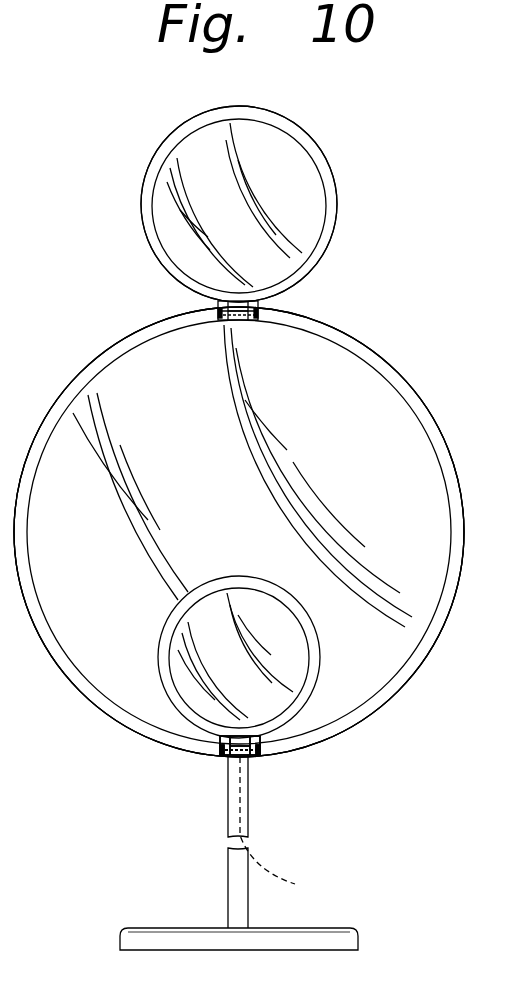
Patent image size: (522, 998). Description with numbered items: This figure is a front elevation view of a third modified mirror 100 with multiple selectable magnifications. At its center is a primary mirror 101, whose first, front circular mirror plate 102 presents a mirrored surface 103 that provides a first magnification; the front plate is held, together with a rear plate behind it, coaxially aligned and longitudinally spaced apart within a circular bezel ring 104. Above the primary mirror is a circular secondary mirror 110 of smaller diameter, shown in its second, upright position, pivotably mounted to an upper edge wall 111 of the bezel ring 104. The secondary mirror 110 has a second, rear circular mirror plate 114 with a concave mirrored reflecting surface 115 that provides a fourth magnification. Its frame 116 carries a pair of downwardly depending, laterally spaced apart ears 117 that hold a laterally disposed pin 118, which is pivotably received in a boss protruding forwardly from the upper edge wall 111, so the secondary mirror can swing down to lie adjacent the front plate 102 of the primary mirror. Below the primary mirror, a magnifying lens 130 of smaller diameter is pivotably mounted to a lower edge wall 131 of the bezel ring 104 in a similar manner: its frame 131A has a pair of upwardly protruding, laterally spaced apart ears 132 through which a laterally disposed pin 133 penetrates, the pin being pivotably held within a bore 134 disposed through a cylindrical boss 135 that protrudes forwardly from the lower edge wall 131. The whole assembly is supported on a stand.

The third modified mirror 100 is at (268, 525).
The primary mirror 101 is at (446, 603).
The front circular mirror plate 102 is at (440, 458).
The mirrored surface 103 is at (428, 511).
The bezel ring 104 is at (417, 658).
The secondary mirror 110 is at (239, 187).
The upper edge wall 111 is at (268, 509).
The rear circular mirror plate 114 is at (302, 143).
The concave mirrored reflecting surface 115 is at (265, 137).
The frame 116 is at (150, 245).
The ears 117 is at (222, 320).
The pin 118 is at (218, 306).
The magnifying lens 130 is at (164, 707).
The lower edge wall 131 is at (380, 707).
The lower mirror ring 131A is at (183, 715).
The ears 132 is at (213, 752).
The pin 133 is at (287, 841).
The bore 134 is at (262, 752).
The cylindrical boss 135 is at (240, 745).